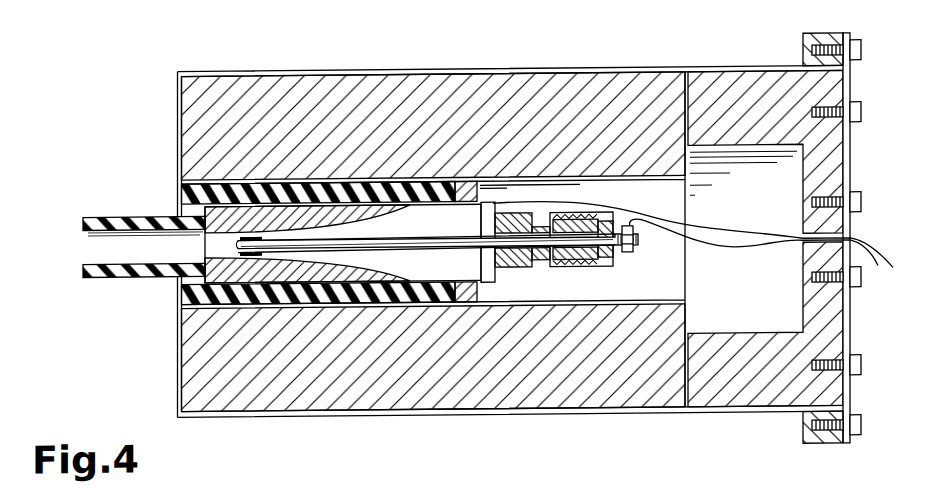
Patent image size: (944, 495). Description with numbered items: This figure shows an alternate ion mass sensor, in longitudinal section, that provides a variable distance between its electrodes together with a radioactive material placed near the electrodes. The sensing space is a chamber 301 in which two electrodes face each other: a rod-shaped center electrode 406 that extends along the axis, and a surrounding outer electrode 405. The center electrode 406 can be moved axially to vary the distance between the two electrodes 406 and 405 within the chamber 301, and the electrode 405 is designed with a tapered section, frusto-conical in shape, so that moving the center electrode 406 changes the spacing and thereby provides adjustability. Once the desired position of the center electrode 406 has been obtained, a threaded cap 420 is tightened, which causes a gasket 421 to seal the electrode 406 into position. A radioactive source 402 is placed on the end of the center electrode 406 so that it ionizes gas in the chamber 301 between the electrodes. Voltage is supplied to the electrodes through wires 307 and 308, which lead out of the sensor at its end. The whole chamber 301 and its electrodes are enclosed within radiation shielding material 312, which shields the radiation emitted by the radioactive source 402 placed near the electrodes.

The radiation shielding material 312 is at (457, 88).
The chamber 301 is at (337, 258).
The outer electrode 405 is at (215, 265).
The radioactive source 402 is at (252, 251).
The center electrode 406 is at (418, 243).
The threaded cap 420 is at (573, 268).
The gasket 421 is at (613, 263).
The wire 307 is at (870, 248).
The wire 308 is at (881, 265).